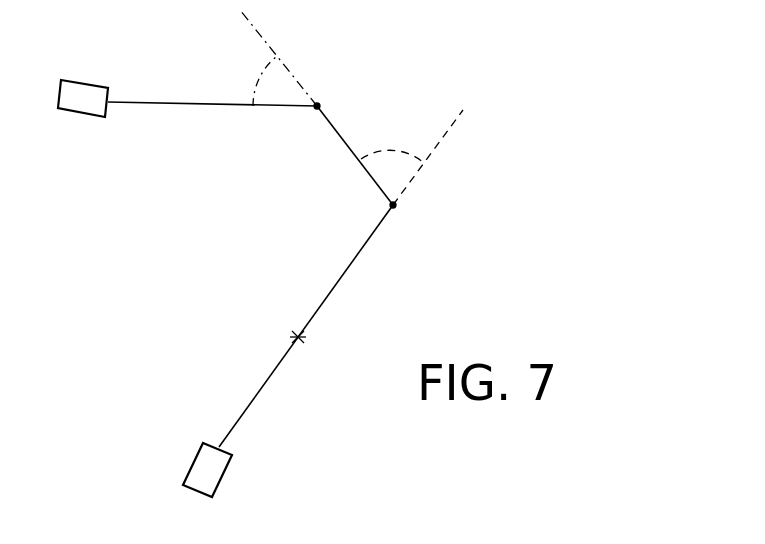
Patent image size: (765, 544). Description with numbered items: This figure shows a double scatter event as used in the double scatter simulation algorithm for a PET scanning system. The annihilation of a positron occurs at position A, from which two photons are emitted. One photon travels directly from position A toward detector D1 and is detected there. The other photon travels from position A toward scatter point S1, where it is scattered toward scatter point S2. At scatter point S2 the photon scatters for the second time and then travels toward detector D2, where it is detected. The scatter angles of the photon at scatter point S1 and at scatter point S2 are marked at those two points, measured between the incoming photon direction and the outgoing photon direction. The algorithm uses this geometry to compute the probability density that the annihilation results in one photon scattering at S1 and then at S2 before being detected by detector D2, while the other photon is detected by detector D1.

The detector D1 is at (220, 473).
The detector D2 is at (83, 87).
The scatter point S1 is at (426, 173).
The scatter point S2 is at (291, 60).
The annihilation position A is at (305, 346).